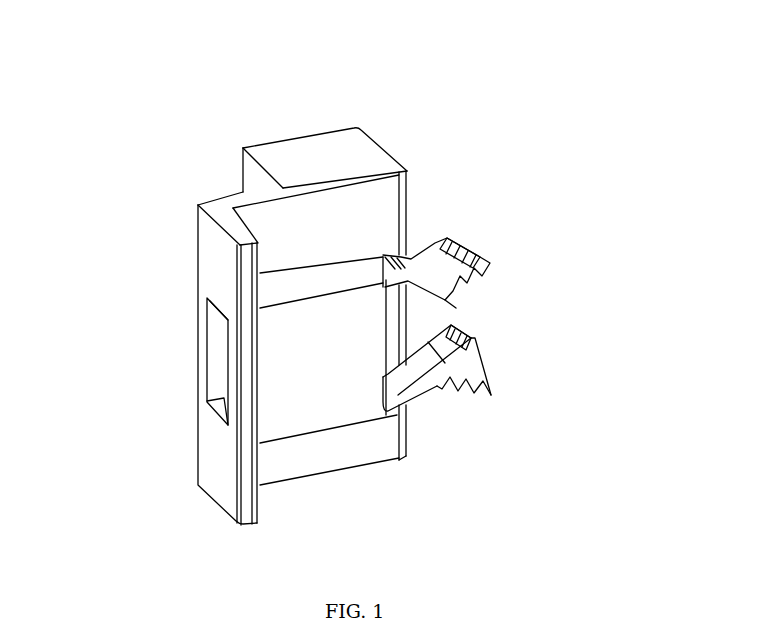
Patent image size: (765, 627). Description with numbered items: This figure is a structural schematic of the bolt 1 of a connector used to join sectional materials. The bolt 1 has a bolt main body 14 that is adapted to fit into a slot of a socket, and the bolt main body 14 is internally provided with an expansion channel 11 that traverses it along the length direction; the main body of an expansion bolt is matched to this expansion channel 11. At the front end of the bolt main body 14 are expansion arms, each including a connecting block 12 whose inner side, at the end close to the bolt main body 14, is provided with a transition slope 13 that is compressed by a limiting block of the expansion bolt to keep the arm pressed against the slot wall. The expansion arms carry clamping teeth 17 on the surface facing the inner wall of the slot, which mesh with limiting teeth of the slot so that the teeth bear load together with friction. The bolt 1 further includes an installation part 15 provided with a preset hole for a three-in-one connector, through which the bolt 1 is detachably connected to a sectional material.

The bolt 1 is at (390, 100).
The expansion channel 11 is at (222, 345).
The connecting block 12 is at (471, 291).
The transition slope 13 is at (425, 363).
The bolt main body 14 is at (218, 273).
The installation part 15 is at (288, 160).
The clamping teeth 17 is at (478, 388).